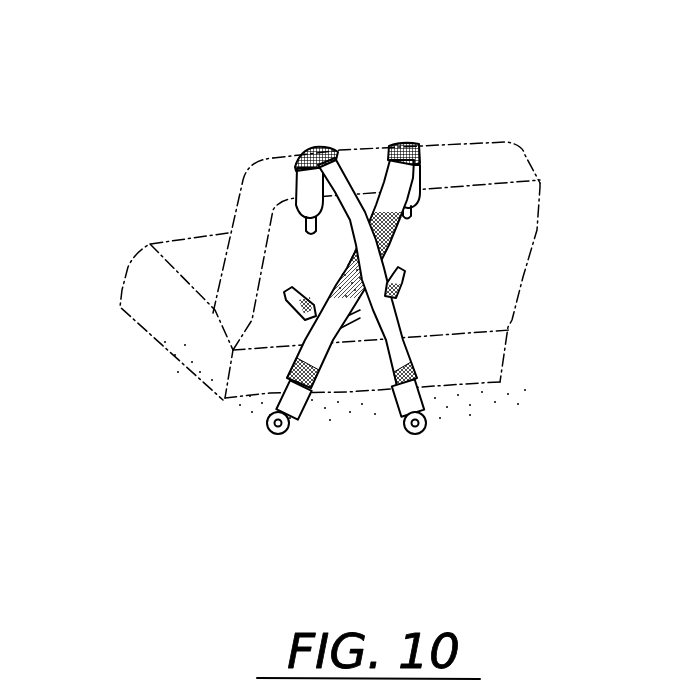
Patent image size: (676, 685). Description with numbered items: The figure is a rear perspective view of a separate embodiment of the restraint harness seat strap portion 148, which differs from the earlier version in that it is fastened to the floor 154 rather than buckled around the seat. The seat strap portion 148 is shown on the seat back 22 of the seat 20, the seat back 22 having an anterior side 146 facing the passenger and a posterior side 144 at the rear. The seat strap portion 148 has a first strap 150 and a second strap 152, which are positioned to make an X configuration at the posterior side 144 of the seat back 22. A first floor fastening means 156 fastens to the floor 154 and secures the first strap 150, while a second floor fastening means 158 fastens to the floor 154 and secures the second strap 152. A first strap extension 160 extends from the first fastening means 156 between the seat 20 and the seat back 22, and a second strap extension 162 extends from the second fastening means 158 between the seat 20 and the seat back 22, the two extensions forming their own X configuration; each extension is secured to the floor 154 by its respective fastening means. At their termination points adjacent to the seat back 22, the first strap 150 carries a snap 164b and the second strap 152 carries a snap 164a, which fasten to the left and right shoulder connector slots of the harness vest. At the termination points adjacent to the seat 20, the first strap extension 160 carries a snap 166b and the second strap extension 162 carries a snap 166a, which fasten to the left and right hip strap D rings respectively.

The seat 20 is at (123, 278).
The seat back 22 is at (538, 178).
The posterior side 144 is at (525, 218).
The anterior side 146 is at (245, 180).
The seat strap portion 148 is at (437, 87).
The first strap 150 is at (377, 314).
The second strap 152 is at (422, 309).
The floor 154 is at (475, 400).
The first floor fastening means 156 is at (404, 424).
The second floor fastening means 158 is at (270, 433).
The first strap extension 160 is at (368, 367).
The second strap extension 162 is at (328, 368).
The snap 164a is at (412, 222).
The snap 164b is at (308, 234).
The snap 166a is at (404, 283).
The snap 166b is at (287, 307).